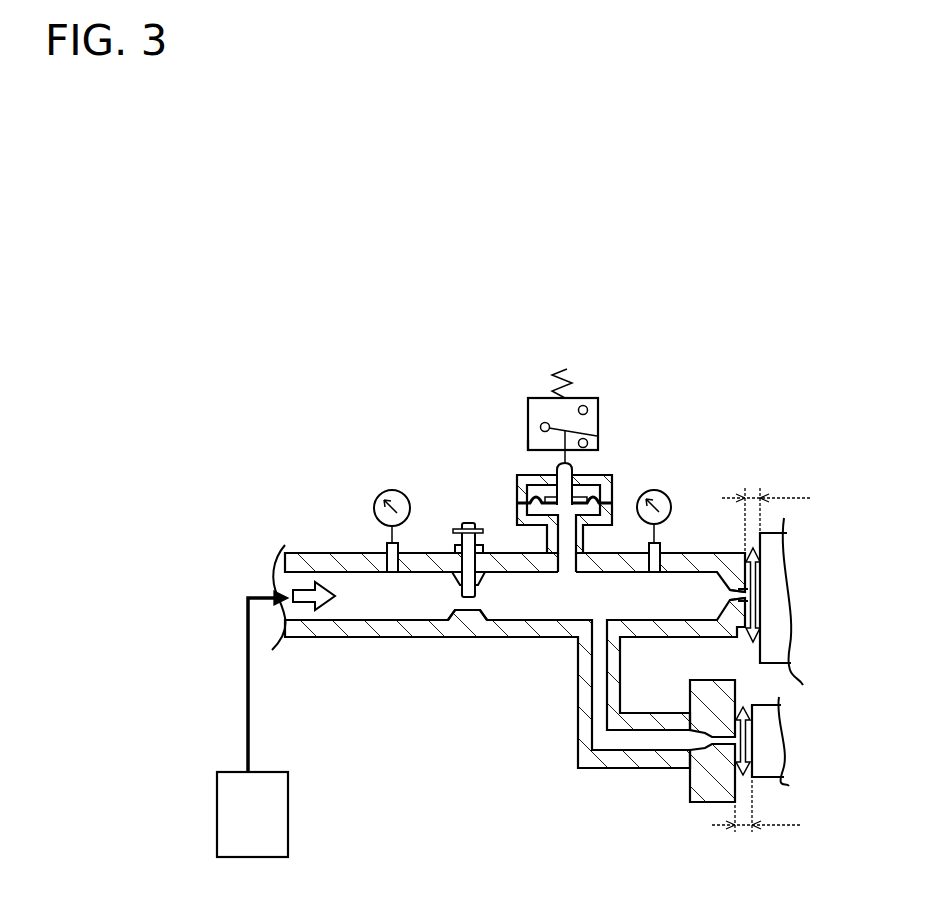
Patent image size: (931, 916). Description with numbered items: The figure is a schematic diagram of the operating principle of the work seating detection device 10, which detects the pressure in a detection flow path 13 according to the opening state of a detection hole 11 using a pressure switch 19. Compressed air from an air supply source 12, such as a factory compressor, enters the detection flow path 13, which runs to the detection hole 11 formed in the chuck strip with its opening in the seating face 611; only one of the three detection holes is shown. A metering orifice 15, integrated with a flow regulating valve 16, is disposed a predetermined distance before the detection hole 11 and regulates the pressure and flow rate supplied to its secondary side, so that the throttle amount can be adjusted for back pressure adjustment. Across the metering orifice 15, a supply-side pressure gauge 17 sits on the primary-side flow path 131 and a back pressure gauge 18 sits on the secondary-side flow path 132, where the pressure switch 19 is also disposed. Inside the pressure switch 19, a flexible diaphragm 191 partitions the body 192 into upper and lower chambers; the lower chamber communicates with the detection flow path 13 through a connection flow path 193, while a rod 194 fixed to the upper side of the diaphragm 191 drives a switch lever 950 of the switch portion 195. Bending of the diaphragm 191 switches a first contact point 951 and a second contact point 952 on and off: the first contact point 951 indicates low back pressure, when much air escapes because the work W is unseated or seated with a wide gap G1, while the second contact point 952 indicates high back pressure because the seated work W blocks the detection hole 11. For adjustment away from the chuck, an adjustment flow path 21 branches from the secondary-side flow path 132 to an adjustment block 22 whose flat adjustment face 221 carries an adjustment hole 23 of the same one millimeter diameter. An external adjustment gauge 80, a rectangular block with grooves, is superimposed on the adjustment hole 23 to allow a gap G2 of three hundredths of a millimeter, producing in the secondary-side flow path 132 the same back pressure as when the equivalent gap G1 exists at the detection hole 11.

The work seating detection device 10 is at (428, 332).
The detection hole 11 is at (724, 595).
The air supply source 12 is at (275, 845).
The detection flow path 13 is at (289, 582).
The primary-side flow path 131 is at (347, 611).
The secondary-side flow path 132 is at (557, 598).
The metering orifice 15 is at (485, 613).
The flow regulating valve 16 is at (466, 528).
The supply-side pressure gauge 17 is at (374, 512).
The back pressure gauge 18 is at (668, 503).
The pressure switch 19 is at (571, 406).
The diaphragm 191 is at (528, 480).
The body 192 is at (517, 503).
The connection flow path 193 is at (557, 518).
The rod 194 is at (574, 470).
The switch portion 195 is at (527, 447).
The adjustment flow path 21 is at (580, 740).
The adjustment block 22 is at (718, 800).
The adjustment face 221 is at (737, 693).
The adjustment hole 23 is at (703, 738).
The seating face 611 is at (750, 627).
The external adjustment gauge 80 is at (775, 727).
The switch lever 950 is at (553, 430).
The first contact point 951 is at (598, 447).
The second contact point 952 is at (588, 411).
The work W is at (778, 583).
The gap G1 is at (767, 519).
The gap G2 is at (756, 806).